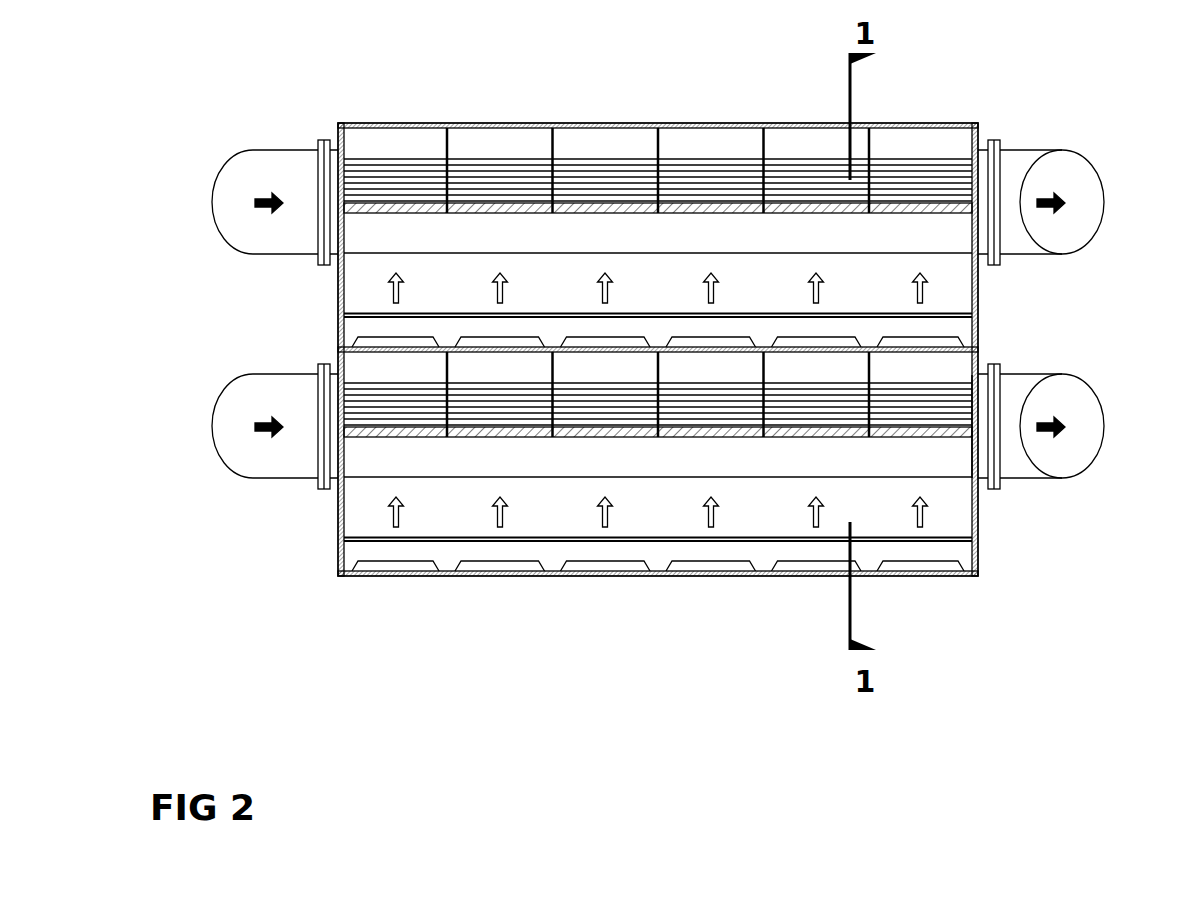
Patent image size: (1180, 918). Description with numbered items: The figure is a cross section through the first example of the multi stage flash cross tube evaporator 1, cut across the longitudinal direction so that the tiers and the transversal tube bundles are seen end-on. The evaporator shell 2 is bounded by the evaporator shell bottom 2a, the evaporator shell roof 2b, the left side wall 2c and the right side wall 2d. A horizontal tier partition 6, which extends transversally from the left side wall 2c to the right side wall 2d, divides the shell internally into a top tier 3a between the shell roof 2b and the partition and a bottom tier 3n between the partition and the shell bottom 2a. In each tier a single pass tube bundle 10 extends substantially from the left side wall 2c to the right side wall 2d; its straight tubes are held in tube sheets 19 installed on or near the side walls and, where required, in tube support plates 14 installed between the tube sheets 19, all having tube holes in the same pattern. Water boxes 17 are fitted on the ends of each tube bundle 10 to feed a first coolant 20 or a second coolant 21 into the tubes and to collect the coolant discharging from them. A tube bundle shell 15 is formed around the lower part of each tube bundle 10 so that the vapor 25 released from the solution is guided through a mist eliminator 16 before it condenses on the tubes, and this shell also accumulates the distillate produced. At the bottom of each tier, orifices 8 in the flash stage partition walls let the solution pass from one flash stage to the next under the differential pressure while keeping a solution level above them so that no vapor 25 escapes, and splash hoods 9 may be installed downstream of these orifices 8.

The evaporator 1 is at (367, 124).
The evaporator shell 2 is at (660, 338).
The evaporator shell bottom 2a is at (447, 572).
The evaporator shell roof 2b is at (432, 124).
The left side wall 2c is at (980, 303).
The right side wall 2d is at (338, 330).
The top tier 3a is at (699, 209).
The bottom tier 3n is at (609, 494).
The horizontal tier partition 6 is at (945, 345).
The orifices 8 is at (738, 563).
The splash hoods 9 is at (772, 541).
The tube bundle 10 is at (643, 172).
The tube support plates 14 is at (555, 140).
The tube bundle shell 15 is at (473, 233).
The mist eliminators 16 is at (700, 433).
The water boxes 17 is at (238, 162).
The tube sheets 19 is at (972, 458).
The first coolant 20 is at (260, 417).
The second coolant 21 is at (1047, 193).
The vapor 25 is at (502, 522).